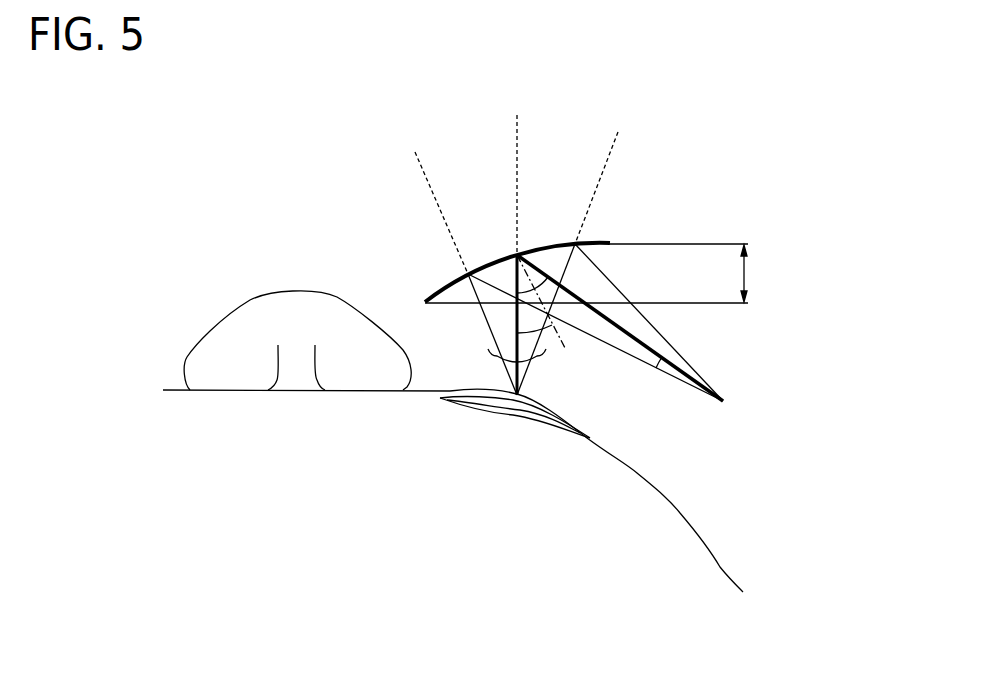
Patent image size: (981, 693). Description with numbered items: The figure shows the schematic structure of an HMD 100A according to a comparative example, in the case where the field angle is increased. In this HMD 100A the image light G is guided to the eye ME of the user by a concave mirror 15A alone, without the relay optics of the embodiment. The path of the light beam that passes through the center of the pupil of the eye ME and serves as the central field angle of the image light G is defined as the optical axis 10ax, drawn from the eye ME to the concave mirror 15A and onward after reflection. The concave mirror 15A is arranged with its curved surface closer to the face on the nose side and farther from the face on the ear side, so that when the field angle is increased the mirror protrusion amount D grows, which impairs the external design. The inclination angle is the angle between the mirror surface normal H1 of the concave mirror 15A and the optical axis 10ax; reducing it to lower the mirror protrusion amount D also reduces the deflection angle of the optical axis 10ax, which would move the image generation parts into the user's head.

The HMD 100A is at (418, 212).
The concave mirror 15A is at (492, 262).
The mirror protrusion amount D is at (595, 273).
The eye ME is at (518, 400).
The optical axis 10ax is at (702, 374).
The mirror surface normal H1 is at (563, 344).
The image light G is at (490, 353).